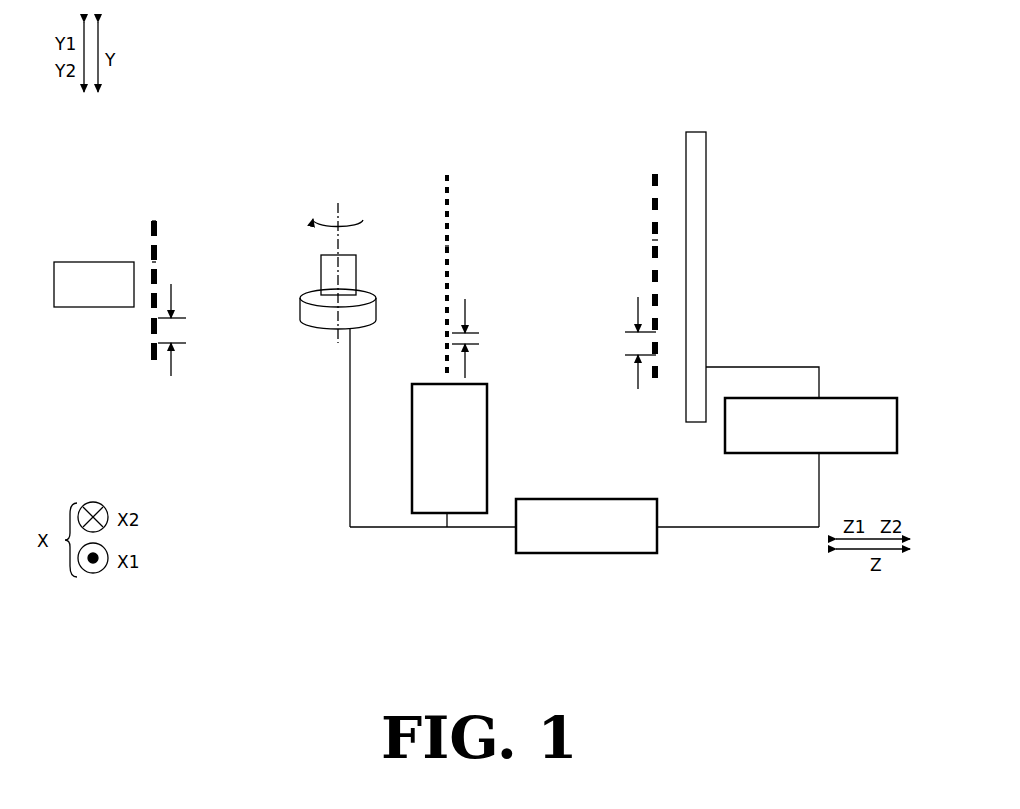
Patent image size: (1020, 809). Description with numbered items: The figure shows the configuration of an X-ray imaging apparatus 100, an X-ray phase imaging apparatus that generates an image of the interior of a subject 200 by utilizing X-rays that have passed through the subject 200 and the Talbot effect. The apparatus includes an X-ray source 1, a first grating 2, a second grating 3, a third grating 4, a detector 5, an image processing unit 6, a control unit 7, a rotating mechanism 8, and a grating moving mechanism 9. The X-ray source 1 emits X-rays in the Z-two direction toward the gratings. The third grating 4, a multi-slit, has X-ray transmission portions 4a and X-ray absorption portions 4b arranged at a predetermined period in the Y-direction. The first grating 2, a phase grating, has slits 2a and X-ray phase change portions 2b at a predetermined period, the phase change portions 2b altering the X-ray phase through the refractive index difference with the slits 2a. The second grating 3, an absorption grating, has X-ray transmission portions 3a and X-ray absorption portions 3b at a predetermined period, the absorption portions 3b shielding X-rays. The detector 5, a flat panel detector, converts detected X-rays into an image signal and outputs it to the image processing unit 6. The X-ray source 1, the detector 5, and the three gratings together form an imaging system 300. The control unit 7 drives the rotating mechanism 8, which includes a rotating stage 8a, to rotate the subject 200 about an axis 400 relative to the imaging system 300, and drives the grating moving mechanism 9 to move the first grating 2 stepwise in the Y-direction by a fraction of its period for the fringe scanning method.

The X-ray imaging apparatus 100 is at (298, 124).
The X-ray source 1 is at (90, 263).
The first grating 2 is at (437, 168).
The slit 2a is at (453, 245).
The X-ray phase change portion 2b is at (450, 200).
The second grating 3 is at (642, 172).
The X-ray transmission portion 3a is at (651, 240).
The X-ray absorption portion 3b is at (651, 205).
The third grating 4 is at (143, 211).
The X-ray transmission portion 4a is at (161, 262).
The X-ray absorption portion 4b is at (157, 229).
The detector 5 is at (694, 423).
The image processing unit 6 is at (866, 454).
The control unit 7 is at (587, 498).
The rotating mechanism 8 is at (304, 408).
The rotating stage 8a is at (306, 325).
The grating moving mechanism 9 is at (490, 412).
The subject 200 is at (357, 262).
The imaging system 300 is at (118, 156).
The axis 400 is at (336, 205).